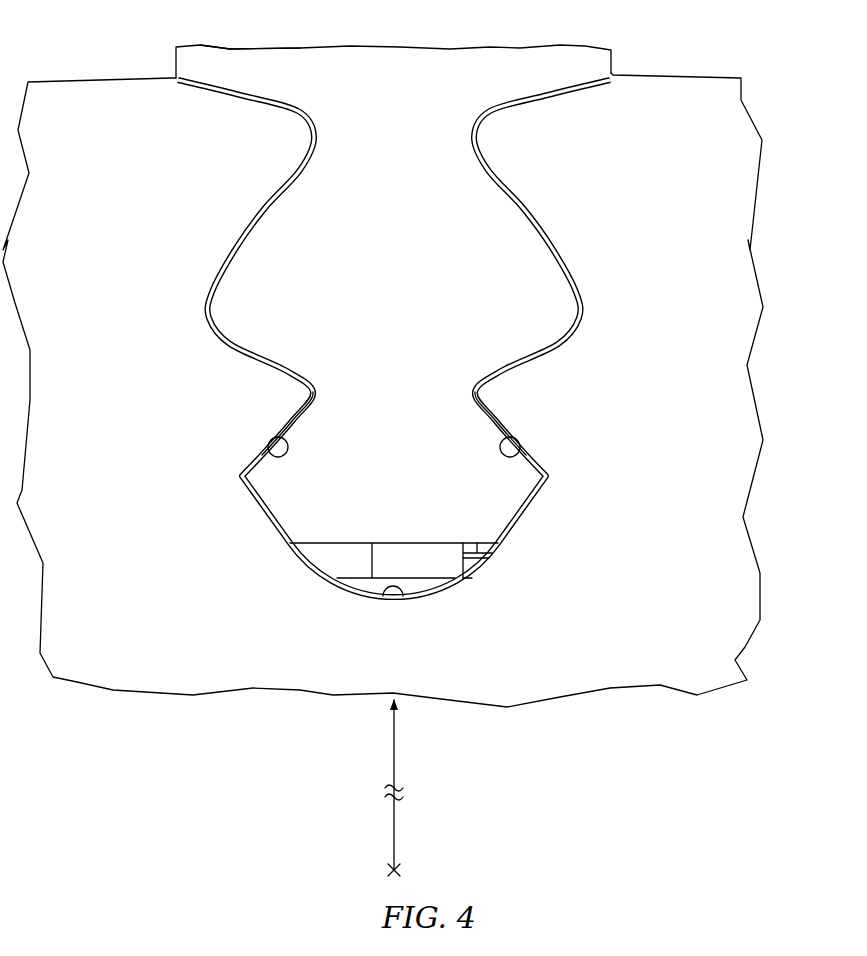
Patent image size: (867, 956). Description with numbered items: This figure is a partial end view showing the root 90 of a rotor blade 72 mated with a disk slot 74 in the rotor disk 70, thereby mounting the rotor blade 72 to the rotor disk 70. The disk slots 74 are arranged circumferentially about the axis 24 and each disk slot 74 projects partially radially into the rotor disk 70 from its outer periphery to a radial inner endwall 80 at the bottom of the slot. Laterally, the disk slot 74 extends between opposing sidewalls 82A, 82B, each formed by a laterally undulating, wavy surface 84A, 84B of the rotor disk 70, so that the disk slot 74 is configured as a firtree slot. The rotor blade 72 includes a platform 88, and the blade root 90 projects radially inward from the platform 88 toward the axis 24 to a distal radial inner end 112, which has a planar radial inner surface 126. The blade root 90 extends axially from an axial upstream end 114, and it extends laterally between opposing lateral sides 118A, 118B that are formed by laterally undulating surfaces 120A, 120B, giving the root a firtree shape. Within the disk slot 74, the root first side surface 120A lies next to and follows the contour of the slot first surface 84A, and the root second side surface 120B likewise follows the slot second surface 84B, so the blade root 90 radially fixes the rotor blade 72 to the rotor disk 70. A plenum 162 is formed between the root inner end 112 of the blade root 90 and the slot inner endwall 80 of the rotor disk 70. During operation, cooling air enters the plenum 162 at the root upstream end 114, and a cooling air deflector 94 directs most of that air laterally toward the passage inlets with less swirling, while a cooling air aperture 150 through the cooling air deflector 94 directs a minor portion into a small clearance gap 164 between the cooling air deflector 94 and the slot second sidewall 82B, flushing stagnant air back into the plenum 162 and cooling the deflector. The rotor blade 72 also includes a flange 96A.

The rotor disk 70 is at (770, 125).
The rotor blade 72 is at (585, 46).
The platform 88 is at (215, 46).
The root 90 is at (207, 302).
The axial upstream end 114 is at (466, 292).
The lateral side 118A is at (206, 422).
The laterally undulating surface 120A is at (298, 413).
The lateral side 118B is at (581, 422).
The laterally undulating surface 120B is at (491, 417).
The sidewall 82A is at (208, 450).
The laterally undulating surface 84A is at (268, 450).
The sidewall 82B is at (581, 450).
The laterally undulating surface 84B is at (520, 449).
The distal radial inner end 112 is at (394, 606).
The radial inner surface 126 is at (372, 578).
The cooling air aperture 150 is at (477, 552).
The clearance gap 164 is at (492, 560).
The cooling air deflector 94 is at (482, 572).
The plenum 162 is at (418, 592).
The radial inner endwall 80 is at (397, 591).
The disk slot 74 is at (346, 588).
The flange 96A is at (312, 568).
The axis 24 is at (398, 870).